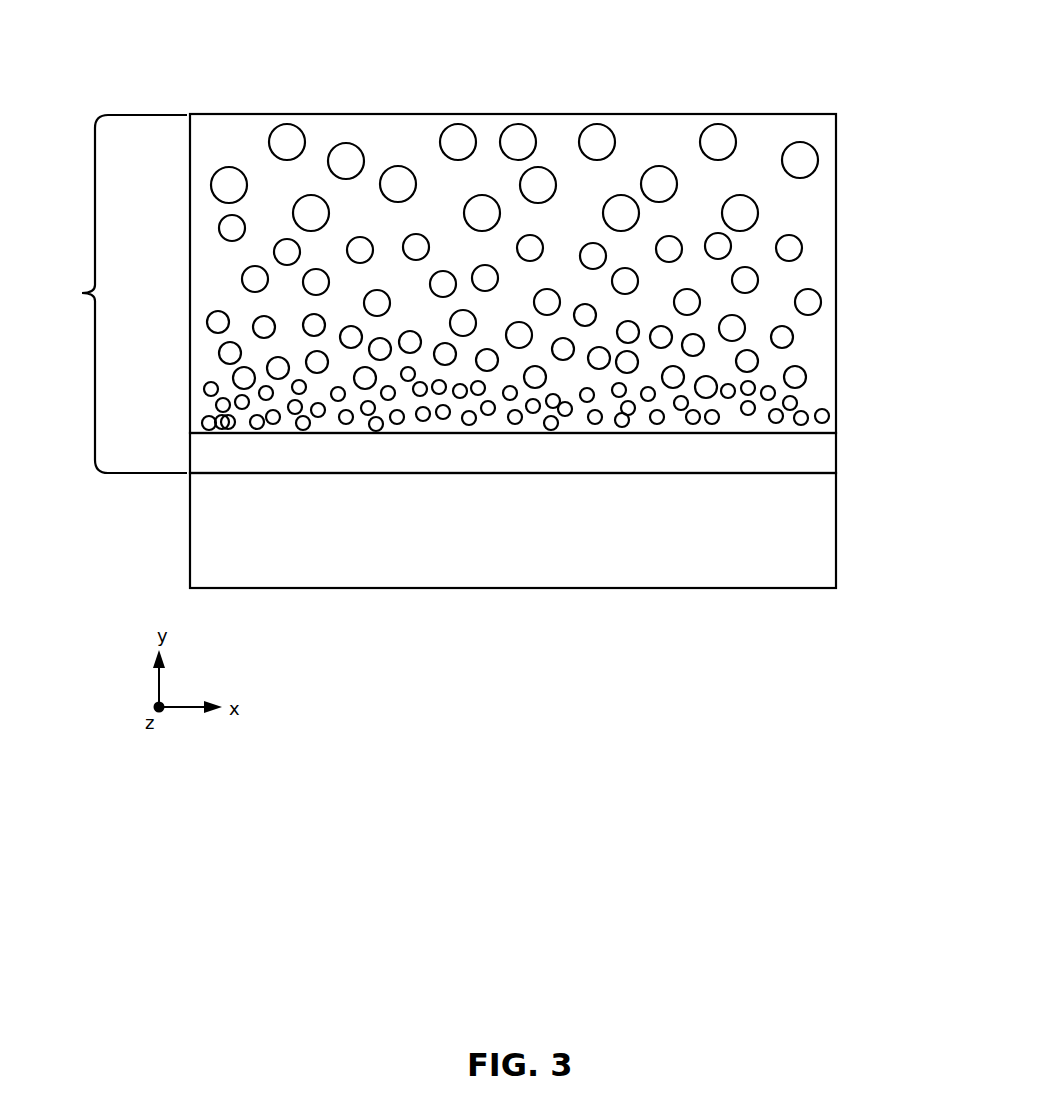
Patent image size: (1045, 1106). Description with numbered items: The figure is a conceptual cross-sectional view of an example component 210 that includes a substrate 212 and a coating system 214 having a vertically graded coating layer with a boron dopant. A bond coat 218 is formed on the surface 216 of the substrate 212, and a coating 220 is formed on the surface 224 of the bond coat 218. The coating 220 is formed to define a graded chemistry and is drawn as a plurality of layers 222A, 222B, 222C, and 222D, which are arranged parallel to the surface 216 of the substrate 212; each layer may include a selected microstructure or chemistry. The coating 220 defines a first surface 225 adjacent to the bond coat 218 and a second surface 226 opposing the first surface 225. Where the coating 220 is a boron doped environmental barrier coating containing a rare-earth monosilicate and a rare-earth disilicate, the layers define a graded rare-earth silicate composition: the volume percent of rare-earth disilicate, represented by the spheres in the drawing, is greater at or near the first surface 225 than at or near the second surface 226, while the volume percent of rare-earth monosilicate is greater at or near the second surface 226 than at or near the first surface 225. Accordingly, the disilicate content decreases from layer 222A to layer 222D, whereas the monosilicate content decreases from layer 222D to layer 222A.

The component 210 is at (489, 308).
The substrate 212 is at (501, 530).
The coating system 214 is at (109, 294).
The surface 216 is at (805, 474).
The bond coat 218 is at (508, 462).
The coating 220 is at (524, 246).
The layer 222A is at (836, 392).
The layer 222B is at (836, 392).
The layer 222C is at (836, 323).
The layer 222D is at (836, 223).
The surface 224 is at (820, 434).
The first surface 225 is at (220, 430).
The second surface 226 is at (333, 113).